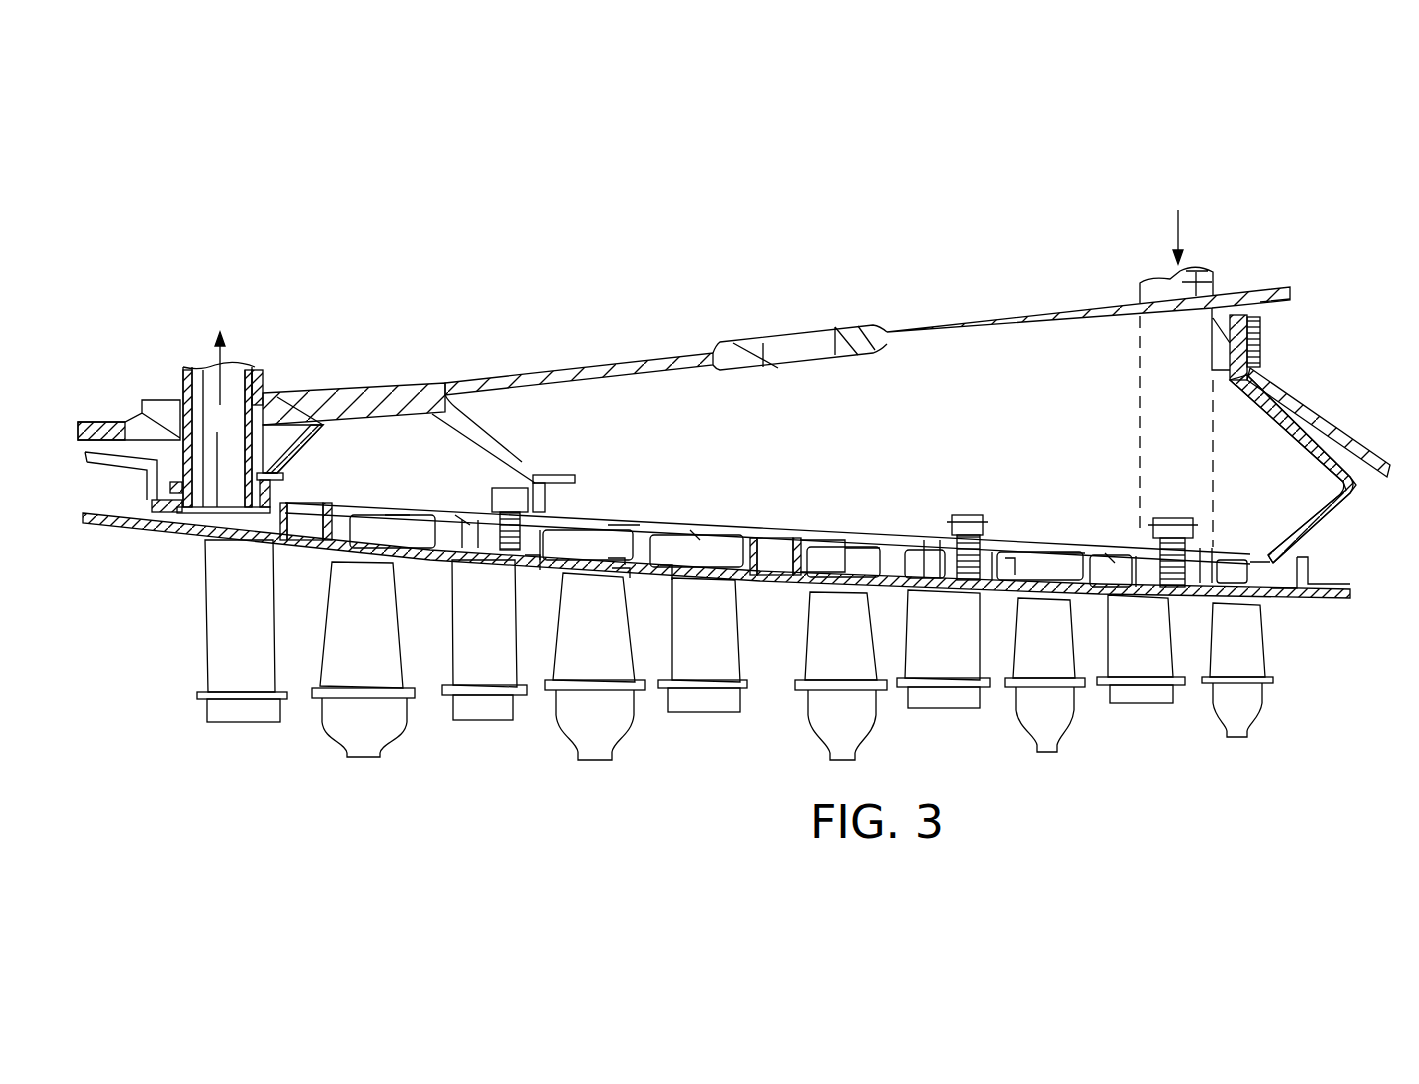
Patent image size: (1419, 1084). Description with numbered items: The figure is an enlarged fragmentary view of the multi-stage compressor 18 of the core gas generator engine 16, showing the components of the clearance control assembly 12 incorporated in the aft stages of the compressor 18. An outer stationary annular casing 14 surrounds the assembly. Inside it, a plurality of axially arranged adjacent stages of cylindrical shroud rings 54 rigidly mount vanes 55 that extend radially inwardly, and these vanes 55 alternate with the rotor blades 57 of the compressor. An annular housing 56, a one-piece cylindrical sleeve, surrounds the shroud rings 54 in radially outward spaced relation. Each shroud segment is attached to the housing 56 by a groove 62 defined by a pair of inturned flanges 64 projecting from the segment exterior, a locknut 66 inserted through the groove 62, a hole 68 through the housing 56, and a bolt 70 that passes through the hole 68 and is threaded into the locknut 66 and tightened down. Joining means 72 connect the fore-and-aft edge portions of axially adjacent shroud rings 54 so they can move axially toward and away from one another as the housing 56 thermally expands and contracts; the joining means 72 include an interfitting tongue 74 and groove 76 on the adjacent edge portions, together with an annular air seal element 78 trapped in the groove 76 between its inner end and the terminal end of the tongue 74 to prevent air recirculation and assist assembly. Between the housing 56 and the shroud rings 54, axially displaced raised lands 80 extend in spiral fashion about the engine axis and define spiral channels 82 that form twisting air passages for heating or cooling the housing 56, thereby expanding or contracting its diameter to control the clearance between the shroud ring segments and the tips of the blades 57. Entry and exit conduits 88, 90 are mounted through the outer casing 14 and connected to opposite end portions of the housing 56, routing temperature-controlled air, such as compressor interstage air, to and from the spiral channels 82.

The clearance control assembly 12 is at (1012, 404).
The outer stationary annular casing 14 is at (986, 322).
The core gas generator engine 16 is at (498, 362).
The multi-stage compressor 18 is at (1252, 246).
The shroud rings 54 is at (455, 565).
The vanes 55 is at (222, 606).
The annular housing 56 is at (838, 530).
The rotor blades 57 is at (346, 672).
The groove 62 is at (533, 565).
The inturned flanges 64 is at (470, 540).
The locknut 66 is at (470, 560).
The hole 68 is at (510, 488).
The bolt 70 is at (517, 478).
The joining means 72 is at (397, 508).
The tongue element 74 is at (662, 578).
The groove element 76 is at (622, 575).
The annular air seal element 78 is at (620, 565).
The raised lands 80 is at (462, 518).
The spiral channels 82 is at (357, 525).
The entry conduits 88 is at (1160, 291).
The exit conduits 90 is at (258, 372).